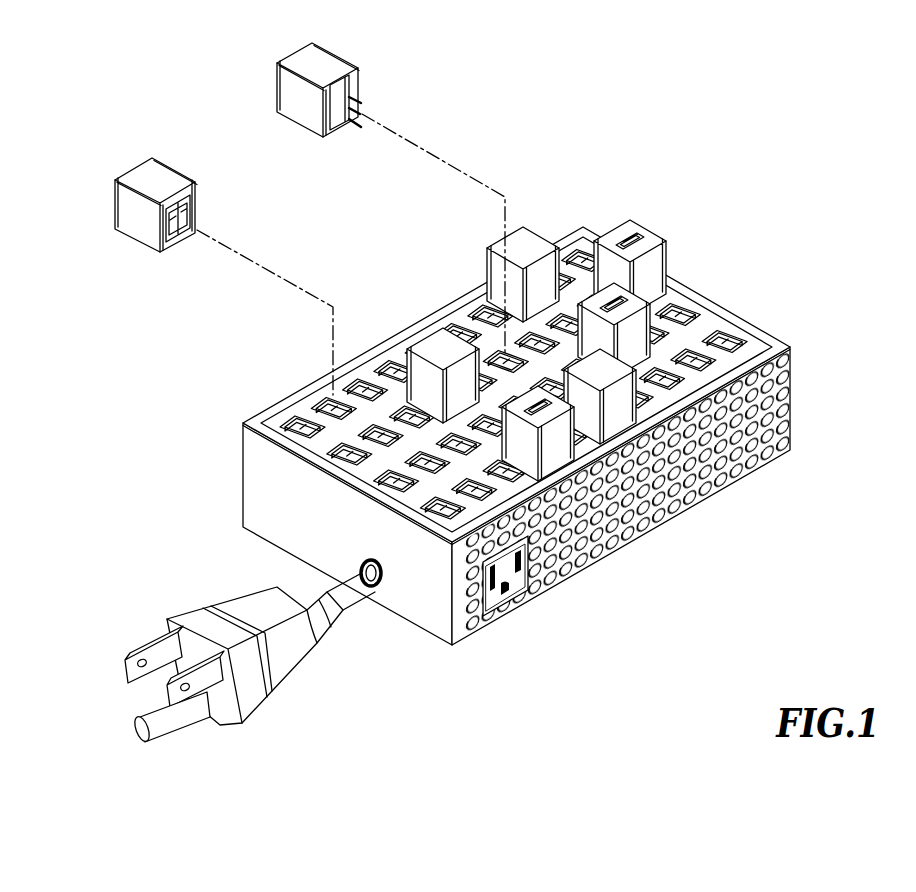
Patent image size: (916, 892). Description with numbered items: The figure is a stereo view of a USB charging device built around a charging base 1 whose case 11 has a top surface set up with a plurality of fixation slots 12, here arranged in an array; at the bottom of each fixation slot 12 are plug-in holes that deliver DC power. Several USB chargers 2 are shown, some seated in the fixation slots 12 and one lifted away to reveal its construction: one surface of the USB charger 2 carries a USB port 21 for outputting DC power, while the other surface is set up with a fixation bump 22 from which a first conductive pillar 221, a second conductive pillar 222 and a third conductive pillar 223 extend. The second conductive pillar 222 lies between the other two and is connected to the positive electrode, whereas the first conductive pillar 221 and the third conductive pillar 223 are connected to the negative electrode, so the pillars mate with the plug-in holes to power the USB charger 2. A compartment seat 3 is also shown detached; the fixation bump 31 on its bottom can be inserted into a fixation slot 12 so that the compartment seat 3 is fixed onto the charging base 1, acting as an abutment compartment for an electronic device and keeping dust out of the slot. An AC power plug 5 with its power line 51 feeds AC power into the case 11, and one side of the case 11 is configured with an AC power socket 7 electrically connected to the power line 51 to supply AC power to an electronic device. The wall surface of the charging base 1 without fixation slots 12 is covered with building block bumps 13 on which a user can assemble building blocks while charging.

The charging base 1 is at (562, 482).
The case 11 is at (430, 608).
The fixation slot 12 is at (725, 342).
The building block bump 13 is at (771, 445).
The USB charger 2 is at (470, 327).
The USB port 21 is at (630, 237).
The fixation bump 22 is at (388, 124).
The first conductive pillar 221 is at (349, 130).
The second conductive pillar 222 is at (361, 111).
The third conductive pillar 223 is at (361, 99).
The compartment seat 3 is at (174, 187).
The fixation bump 31 is at (190, 198).
The AC power plug 5 is at (223, 597).
The power line 51 is at (361, 568).
The AC power socket 7 is at (518, 583).